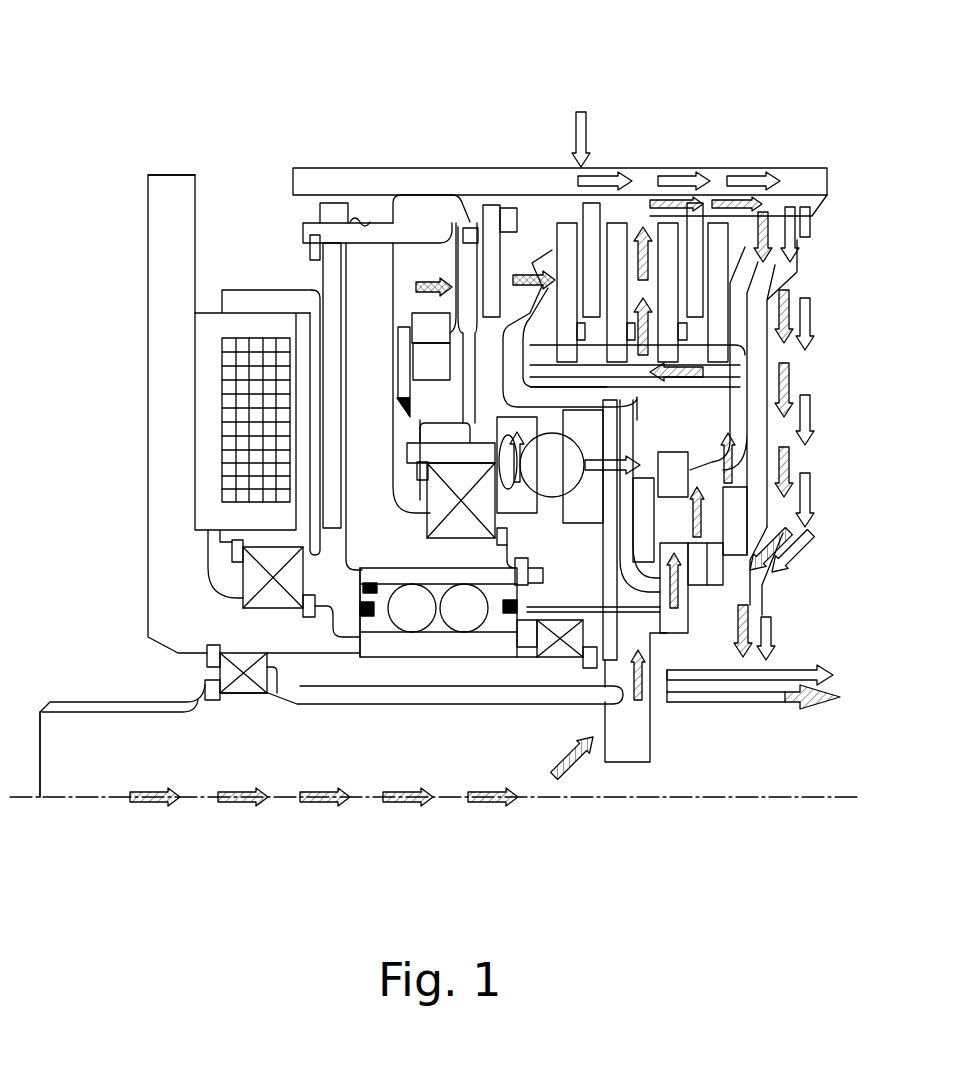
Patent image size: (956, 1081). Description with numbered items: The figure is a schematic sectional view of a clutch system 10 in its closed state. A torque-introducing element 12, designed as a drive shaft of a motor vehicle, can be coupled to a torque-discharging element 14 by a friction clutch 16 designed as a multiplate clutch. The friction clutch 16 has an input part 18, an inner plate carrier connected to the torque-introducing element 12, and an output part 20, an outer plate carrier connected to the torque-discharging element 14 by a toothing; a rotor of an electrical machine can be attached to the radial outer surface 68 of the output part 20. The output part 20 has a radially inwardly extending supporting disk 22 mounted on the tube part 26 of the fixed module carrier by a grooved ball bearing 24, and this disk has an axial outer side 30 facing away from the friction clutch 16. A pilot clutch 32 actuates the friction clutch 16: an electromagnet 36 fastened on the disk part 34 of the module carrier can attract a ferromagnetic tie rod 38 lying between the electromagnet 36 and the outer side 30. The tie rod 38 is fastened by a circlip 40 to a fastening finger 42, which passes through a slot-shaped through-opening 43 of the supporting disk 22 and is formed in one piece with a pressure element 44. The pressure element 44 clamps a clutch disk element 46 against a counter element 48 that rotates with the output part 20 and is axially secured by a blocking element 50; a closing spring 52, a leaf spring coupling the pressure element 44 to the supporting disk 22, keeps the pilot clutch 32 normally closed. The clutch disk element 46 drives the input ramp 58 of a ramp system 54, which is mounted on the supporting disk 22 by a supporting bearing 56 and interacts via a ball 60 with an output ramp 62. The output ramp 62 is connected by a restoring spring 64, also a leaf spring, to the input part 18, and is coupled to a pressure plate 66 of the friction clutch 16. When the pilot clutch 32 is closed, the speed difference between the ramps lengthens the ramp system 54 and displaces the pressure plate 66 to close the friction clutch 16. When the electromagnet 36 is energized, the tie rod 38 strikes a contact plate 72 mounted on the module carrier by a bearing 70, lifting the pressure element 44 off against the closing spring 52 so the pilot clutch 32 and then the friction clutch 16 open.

The clutch system 10 is at (166, 72).
The torque-introducing element 12 is at (113, 760).
The torque-discharging element 14 is at (755, 597).
The friction clutch 16 is at (692, 266).
The input part 18 is at (733, 380).
The output part 20 is at (640, 180).
The supporting disk 22 is at (390, 243).
The grooved ball bearing 24 is at (447, 645).
The tube part 26 is at (348, 673).
The axial outer side 30 is at (178, 653).
The pilot clutch 32 is at (410, 303).
The disk part 34 is at (165, 455).
The electromagnet 36 is at (222, 428).
The tie rod 38 is at (328, 357).
The circlip 40 is at (312, 252).
The fastening finger 42 is at (328, 233).
The through-opening 43 is at (358, 227).
The pressure element 44 is at (450, 223).
The clutch disk element 46 is at (473, 228).
The counter element 48 is at (490, 215).
The blocking element 50 is at (507, 213).
The closing spring 52 is at (330, 400).
The ramp system 54 is at (593, 515).
The supporting bearing 56 is at (470, 530).
The input ramp 58 is at (513, 618).
The ball 60 is at (552, 465).
The output ramp 62 is at (633, 540).
The restoring spring 64 is at (555, 535).
The pressure plate 66 is at (623, 423).
The radial outer surface 68 is at (790, 167).
The bearing 70 is at (295, 518).
The contact plate 72 is at (308, 513).